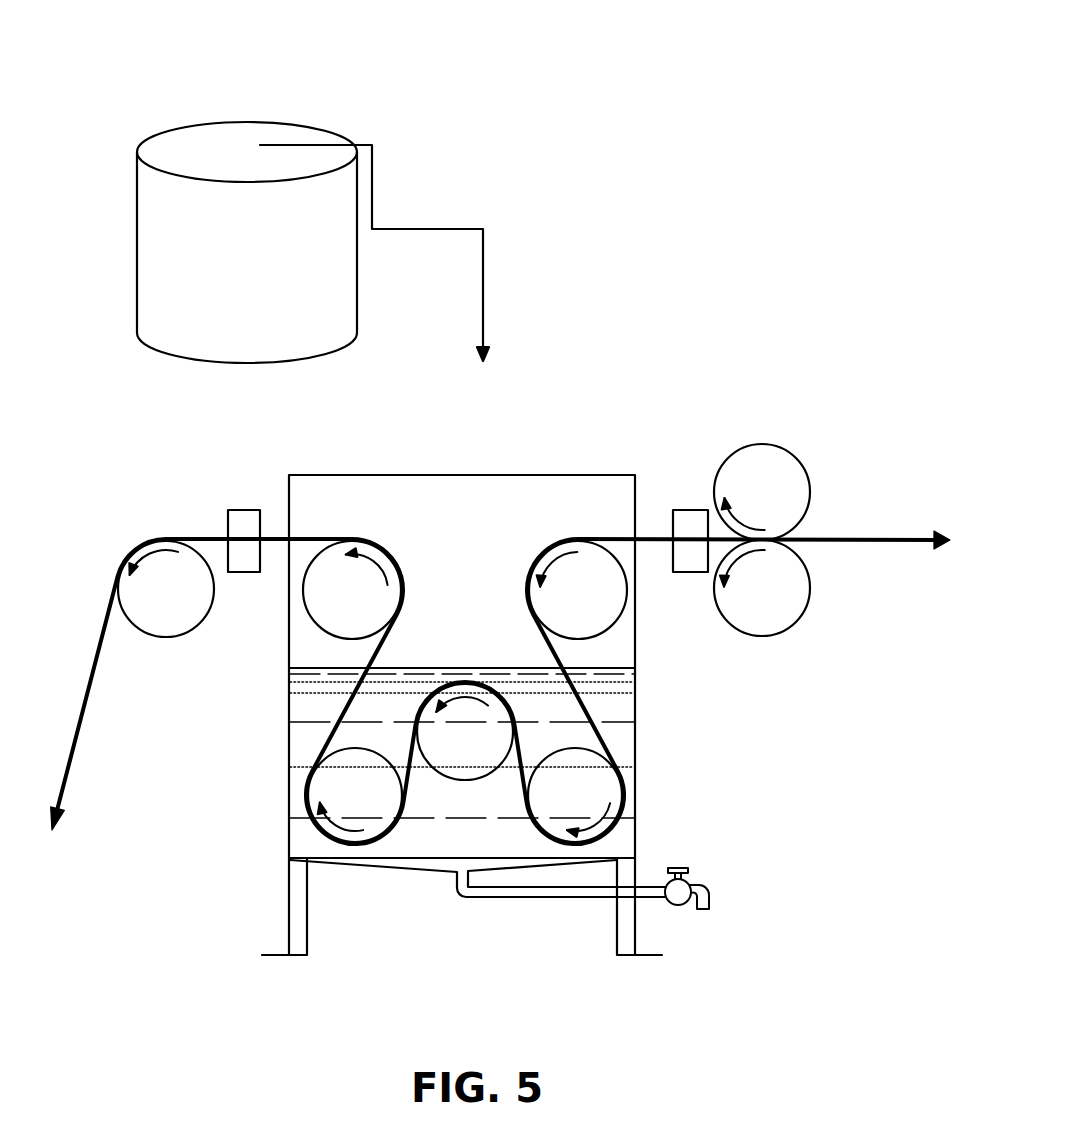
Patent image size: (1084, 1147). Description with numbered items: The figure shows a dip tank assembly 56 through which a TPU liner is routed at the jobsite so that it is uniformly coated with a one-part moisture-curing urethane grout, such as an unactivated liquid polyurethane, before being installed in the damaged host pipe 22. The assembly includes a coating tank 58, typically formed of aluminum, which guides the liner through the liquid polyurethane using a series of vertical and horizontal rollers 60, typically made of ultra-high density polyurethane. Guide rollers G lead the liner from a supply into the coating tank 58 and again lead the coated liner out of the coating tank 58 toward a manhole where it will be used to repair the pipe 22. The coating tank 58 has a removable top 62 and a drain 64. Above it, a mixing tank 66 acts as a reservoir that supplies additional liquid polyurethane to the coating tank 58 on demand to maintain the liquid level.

The host pipe 22 is at (900, 543).
The dip tank assembly 56 is at (110, 100).
The coating tank 58 is at (640, 762).
The rollers 60 is at (560, 767).
The removable top 62 is at (552, 474).
The drain 64 is at (712, 898).
The mixing tank 66 is at (283, 122).